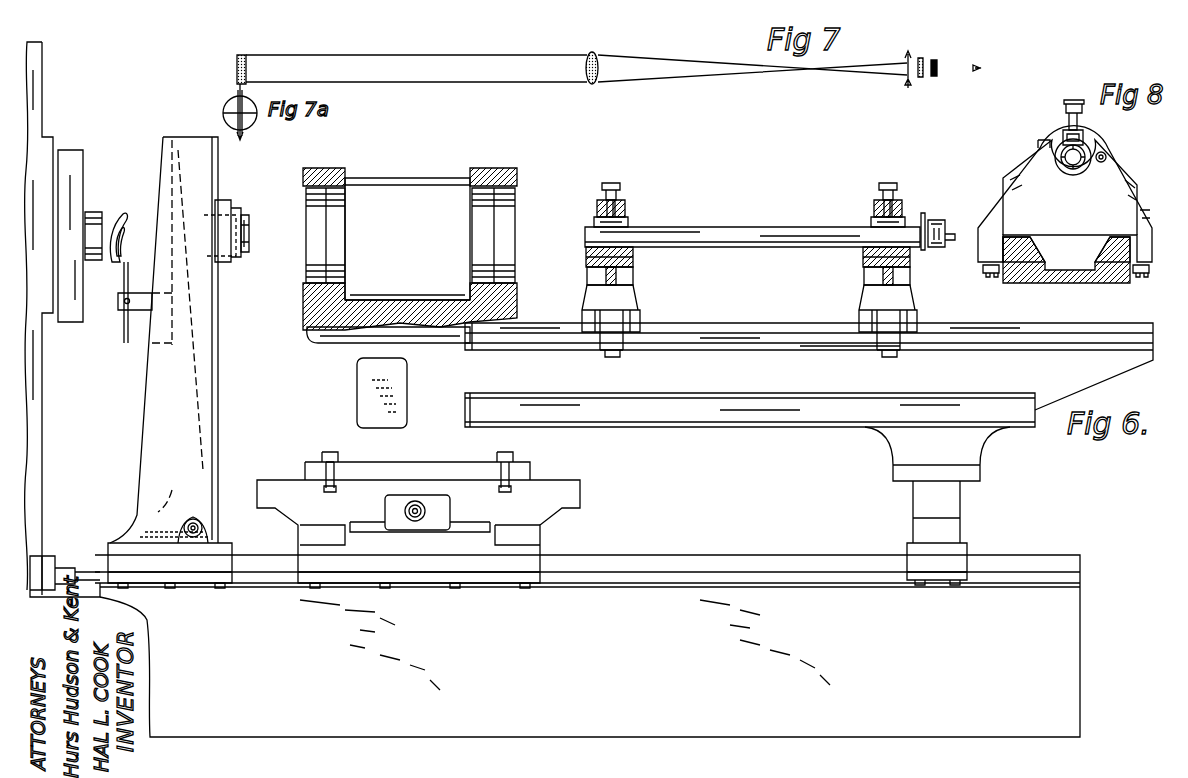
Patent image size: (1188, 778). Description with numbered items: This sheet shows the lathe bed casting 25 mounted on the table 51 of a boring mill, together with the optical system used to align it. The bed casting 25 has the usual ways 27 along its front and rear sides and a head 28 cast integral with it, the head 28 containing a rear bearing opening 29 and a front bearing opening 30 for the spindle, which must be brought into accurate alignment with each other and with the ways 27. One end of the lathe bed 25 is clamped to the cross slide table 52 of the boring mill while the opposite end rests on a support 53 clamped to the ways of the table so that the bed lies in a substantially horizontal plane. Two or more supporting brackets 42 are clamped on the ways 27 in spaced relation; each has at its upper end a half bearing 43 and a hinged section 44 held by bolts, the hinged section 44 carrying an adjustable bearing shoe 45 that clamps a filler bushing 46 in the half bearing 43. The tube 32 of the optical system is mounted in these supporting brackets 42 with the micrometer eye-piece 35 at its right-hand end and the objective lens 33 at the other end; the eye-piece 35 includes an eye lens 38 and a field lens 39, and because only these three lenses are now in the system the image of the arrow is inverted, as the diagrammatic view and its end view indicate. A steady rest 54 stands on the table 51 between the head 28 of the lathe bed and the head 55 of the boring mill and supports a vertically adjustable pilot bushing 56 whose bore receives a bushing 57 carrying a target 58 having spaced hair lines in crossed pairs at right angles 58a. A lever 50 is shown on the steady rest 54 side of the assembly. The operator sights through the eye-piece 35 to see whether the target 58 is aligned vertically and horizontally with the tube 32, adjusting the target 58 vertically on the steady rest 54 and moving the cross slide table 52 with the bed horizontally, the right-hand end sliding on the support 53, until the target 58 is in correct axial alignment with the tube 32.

In FIG. 6, the bed casting 25 is at (750, 391).
In FIG. 8, the bed casting 25 is at (1063, 283).
In FIG. 6, the ways 27 is at (757, 325).
In FIG. 8, the ways 27 is at (1025, 237).
In FIG. 6, the head 28 is at (337, 165).
In FIG. 6, the rear bearing opening 29 is at (333, 190).
In FIG. 6, the front bearing opening 30 is at (503, 187).
In FIG. 6, the tube 32 is at (760, 226).
In FIG. 8, the tube 32 is at (1085, 152).
In FIG. 7, the objective lens 33 is at (595, 52).
In FIG. 6, the micrometer eye-piece 35 is at (925, 217).
In FIG. 7, the eye lens 38 is at (937, 60).
In FIG. 7, the field lens 39 is at (921, 57).
In FIG. 6, the supporting brackets 42 is at (638, 297).
In FIG. 8, the supporting brackets 42 is at (1017, 193).
In FIG. 6, the half bearings 43 is at (635, 252).
In FIG. 8, the half bearings 43 is at (1082, 175).
In FIG. 6, the hinged sections 44 is at (602, 198).
In FIG. 8, the hinged sections 44 is at (1070, 118).
In FIG. 6, the adjustable bearing shoes 45 is at (623, 213).
In FIG. 8, the adjustable bearing shoes 45 is at (1058, 137).
In FIG. 6, the filler bushings 46 is at (628, 223).
In FIG. 8, the filler bushings 46 is at (1085, 148).
In FIG. 6, the lever 50 is at (124, 273).
In FIG. 6, the table 51 is at (698, 595).
In FIG. 6, the cross slide table 52 is at (550, 485).
In FIG. 6, the support 53 is at (952, 502).
In FIG. 6, the steady rest 54 is at (222, 393).
In FIG. 6, the head of the boring mill 55 is at (40, 413).
In FIG. 6, the pilot bushing 56 is at (222, 275).
In FIG. 6, the bushing 57 is at (247, 223).
In FIG. 7A, the target 58 is at (236, 73).
In FIG. 7A, the crossed hair lines 58a is at (224, 112).